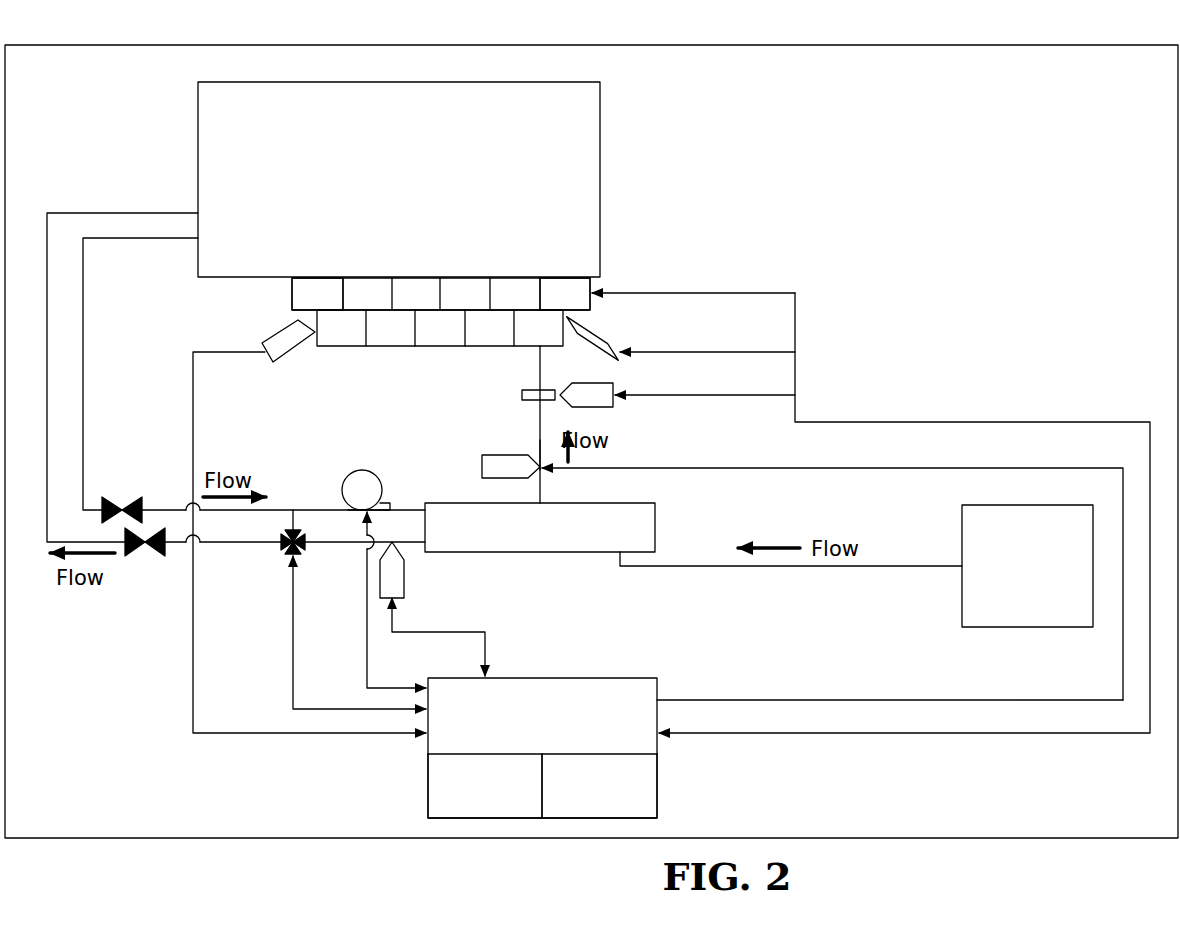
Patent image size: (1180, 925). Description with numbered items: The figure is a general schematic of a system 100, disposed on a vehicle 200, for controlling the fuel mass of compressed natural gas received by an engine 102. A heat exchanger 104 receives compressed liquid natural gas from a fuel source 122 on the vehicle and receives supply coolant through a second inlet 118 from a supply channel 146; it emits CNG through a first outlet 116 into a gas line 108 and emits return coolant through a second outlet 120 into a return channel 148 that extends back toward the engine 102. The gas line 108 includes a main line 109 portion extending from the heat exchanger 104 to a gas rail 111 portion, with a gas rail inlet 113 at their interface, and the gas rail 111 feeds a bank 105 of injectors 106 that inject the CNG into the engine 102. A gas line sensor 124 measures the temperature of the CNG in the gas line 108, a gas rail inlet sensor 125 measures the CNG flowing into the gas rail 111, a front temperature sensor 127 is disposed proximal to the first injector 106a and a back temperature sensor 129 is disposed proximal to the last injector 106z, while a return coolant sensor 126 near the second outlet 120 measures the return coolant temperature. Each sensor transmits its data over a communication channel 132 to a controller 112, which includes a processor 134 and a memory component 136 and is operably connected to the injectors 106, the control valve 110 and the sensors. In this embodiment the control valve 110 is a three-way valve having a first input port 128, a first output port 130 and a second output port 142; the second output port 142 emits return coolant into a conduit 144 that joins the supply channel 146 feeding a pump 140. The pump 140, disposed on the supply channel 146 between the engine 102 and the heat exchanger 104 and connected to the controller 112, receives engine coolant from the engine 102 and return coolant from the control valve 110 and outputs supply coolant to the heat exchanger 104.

The vehicle 200 is at (1020, 60).
The system 100 is at (935, 202).
The engine 102 is at (600, 165).
The bank 105 is at (291, 292).
The injectors 106 is at (467, 295).
The last injector 106z is at (318, 297).
The first injector 106a is at (563, 290).
The gas rail 111 is at (392, 349).
The back temperature sensor 129 is at (283, 326).
The front temperature sensor 127 is at (592, 322).
The gas line 108 is at (545, 421).
The gas rail inlet 113 is at (521, 393).
The gas rail inlet sensor 125 is at (607, 383).
The gas line sensor 124 is at (484, 465).
The main line 109 is at (540, 442).
The first outlet 116 is at (543, 501).
The heat exchanger 104 is at (660, 527).
The fuel source 122 is at (980, 542).
The controller 112 is at (660, 748).
The processor 134 is at (485, 786).
The memory component 136 is at (599, 786).
The return channel 148 is at (47, 277).
The supply channel 146 is at (83, 398).
The control valve 110 is at (281, 547).
The second output port 142 is at (293, 533).
The conduit 144 is at (302, 521).
The first input port 128 is at (302, 548).
The first output port 130 is at (279, 549).
The pump 140 is at (365, 480).
The second inlet 118 is at (418, 510).
The second outlet 120 is at (418, 553).
The return coolant sensor 126 is at (405, 587).
The communication channel 132 is at (732, 395).